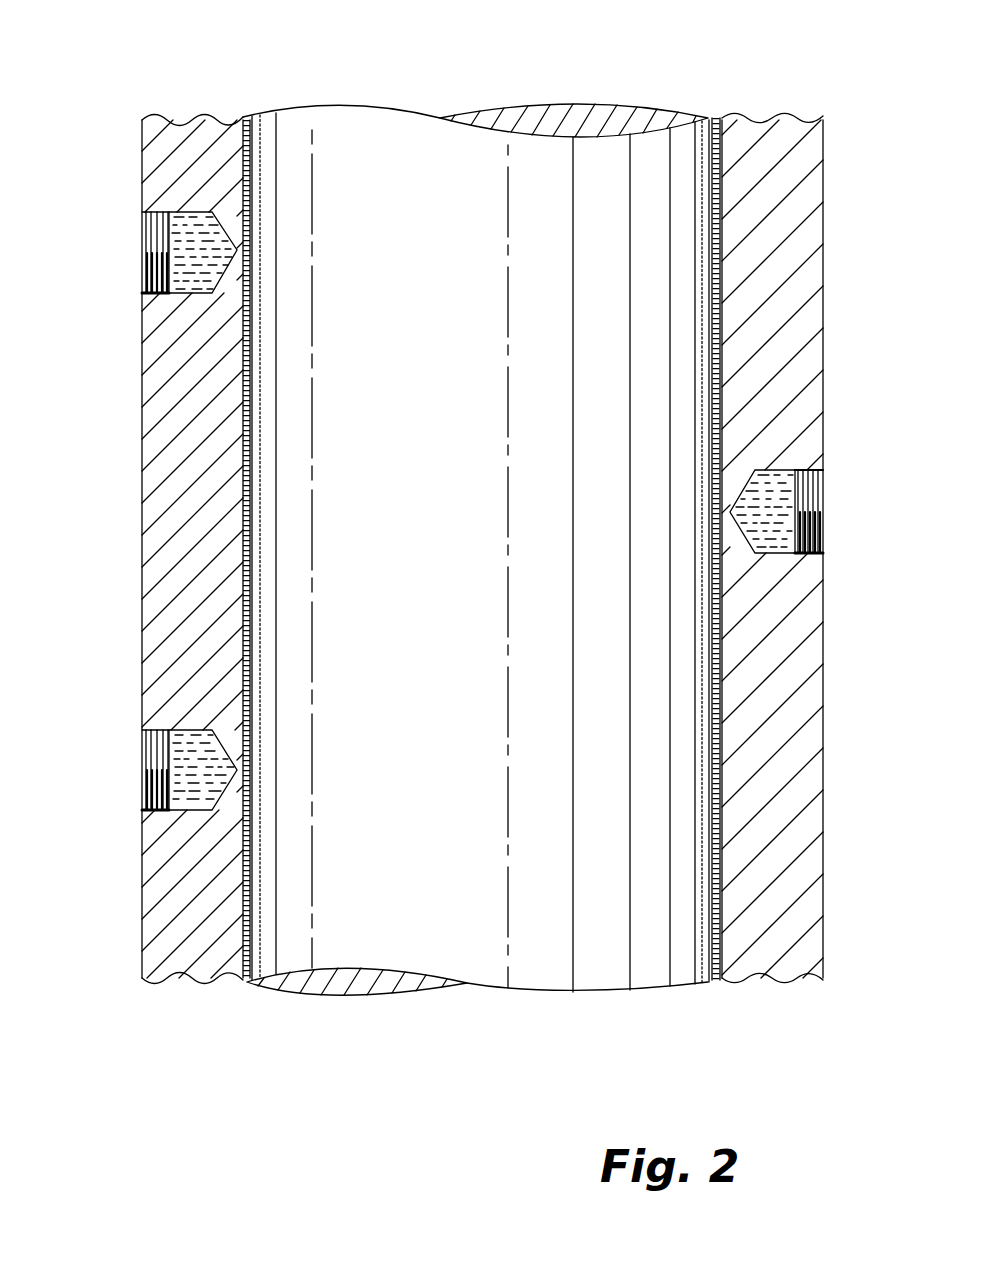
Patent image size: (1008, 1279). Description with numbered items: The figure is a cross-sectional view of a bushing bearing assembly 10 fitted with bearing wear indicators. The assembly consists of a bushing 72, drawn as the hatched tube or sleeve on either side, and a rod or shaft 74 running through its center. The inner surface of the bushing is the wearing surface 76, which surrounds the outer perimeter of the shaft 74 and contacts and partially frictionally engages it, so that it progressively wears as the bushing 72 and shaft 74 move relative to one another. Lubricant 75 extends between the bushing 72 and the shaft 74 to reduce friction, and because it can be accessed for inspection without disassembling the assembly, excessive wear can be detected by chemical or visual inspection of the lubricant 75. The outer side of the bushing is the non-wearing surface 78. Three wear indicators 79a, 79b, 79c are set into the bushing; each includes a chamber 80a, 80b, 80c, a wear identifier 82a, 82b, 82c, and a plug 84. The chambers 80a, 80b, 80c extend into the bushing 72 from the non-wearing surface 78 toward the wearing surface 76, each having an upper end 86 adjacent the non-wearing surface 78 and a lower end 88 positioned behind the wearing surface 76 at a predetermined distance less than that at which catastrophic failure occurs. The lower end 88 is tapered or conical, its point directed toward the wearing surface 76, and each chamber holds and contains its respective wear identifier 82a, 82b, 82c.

The downhole tool assembly 10 is at (157, 50).
The bushing 72 is at (823, 140).
The shaft 74 is at (427, 334).
The lubricant 75 is at (243, 888).
The wearing surface 76 is at (250, 378).
The non-wearing surface 78 is at (823, 176).
The wear indicator 79a is at (137, 280).
The wear indicator 79b is at (106, 742).
The wear indicator 79c is at (880, 522).
The chamber 80a is at (150, 217).
The chamber 80b is at (150, 735).
The chamber 80c is at (797, 467).
The wear identifier 82a is at (175, 296).
The wear identifier 82b is at (175, 812).
The wear identifier 82c is at (777, 548).
The plug 84 is at (148, 244).
The upper end 86 is at (803, 472).
The lower end 88 is at (237, 250).